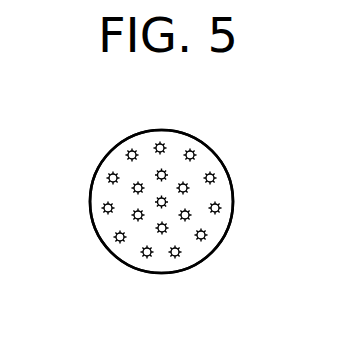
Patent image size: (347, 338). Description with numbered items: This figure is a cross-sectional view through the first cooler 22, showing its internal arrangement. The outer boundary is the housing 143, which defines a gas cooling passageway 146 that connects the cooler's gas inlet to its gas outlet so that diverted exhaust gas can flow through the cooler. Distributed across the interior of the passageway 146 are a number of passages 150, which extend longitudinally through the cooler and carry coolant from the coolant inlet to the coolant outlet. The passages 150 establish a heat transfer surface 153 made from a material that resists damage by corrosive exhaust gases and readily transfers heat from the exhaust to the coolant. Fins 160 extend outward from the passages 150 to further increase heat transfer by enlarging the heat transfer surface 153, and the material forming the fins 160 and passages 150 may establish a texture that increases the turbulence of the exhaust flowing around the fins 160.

The first cooler 22 is at (193, 130).
The gas cooling passageway 146 is at (108, 160).
The housing 143 is at (227, 163).
The heat transfer surface 153 is at (158, 141).
The fins 160 is at (222, 205).
The passages 150 is at (207, 236).